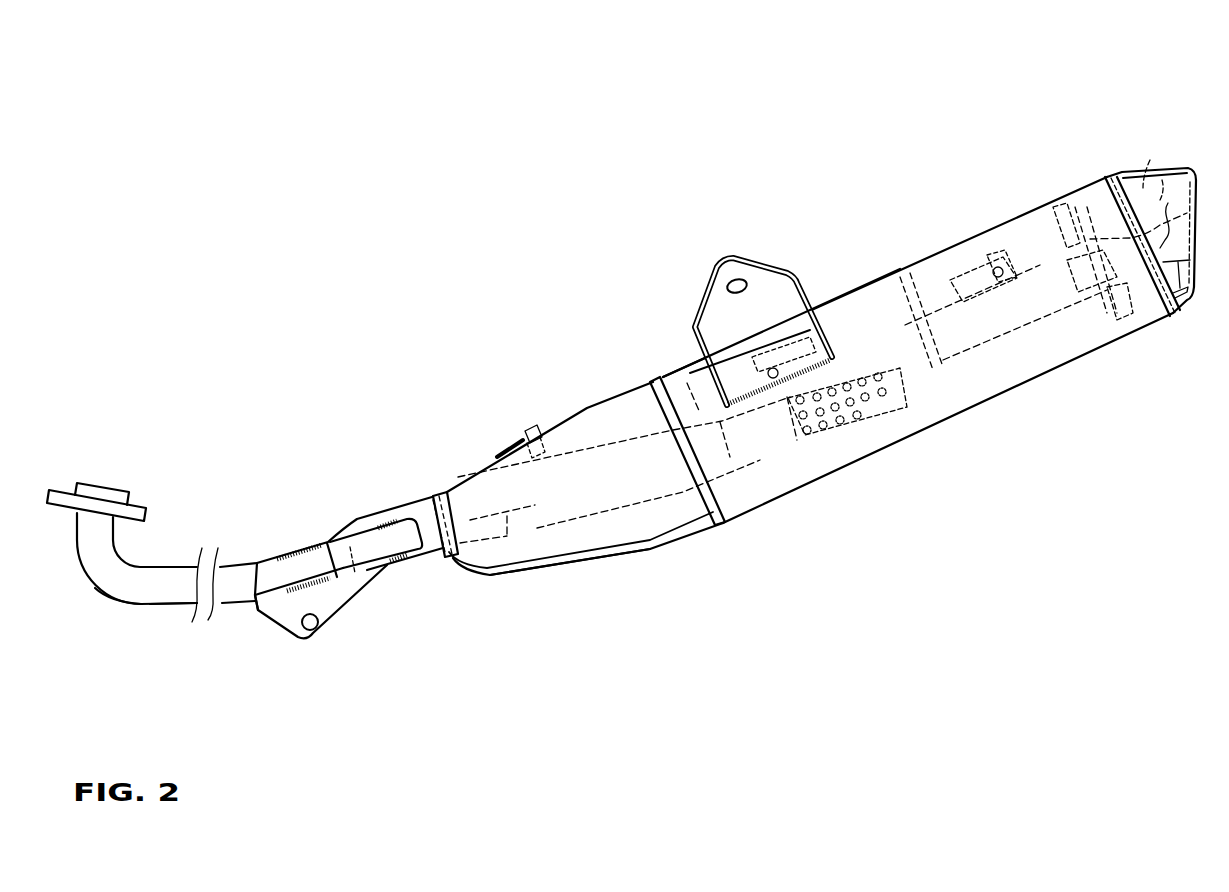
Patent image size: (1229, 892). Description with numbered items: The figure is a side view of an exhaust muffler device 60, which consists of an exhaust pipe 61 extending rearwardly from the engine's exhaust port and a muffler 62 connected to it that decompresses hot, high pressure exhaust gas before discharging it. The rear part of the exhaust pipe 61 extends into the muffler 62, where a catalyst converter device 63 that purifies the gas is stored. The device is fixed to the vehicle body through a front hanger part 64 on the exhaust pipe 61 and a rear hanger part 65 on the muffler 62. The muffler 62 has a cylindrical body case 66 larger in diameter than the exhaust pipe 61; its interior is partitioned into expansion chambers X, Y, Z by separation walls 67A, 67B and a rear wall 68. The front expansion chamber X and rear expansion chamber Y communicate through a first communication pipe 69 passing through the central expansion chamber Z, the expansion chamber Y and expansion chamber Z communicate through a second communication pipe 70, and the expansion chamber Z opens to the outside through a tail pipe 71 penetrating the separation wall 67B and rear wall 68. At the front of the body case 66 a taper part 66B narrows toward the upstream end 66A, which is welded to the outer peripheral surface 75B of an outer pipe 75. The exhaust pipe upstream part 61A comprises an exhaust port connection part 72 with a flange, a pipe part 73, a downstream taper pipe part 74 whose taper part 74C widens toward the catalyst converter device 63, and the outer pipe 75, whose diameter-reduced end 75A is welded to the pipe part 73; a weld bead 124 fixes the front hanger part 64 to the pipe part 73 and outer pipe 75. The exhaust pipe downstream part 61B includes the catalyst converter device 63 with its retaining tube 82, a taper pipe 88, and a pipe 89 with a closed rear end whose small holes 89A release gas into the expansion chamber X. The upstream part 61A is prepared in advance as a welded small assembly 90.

The exhaust muffler device 60 is at (976, 94).
The exhaust pipe 61 is at (173, 617).
The exhaust pipe upstream part 61A is at (147, 611).
The exhaust pipe downstream part 61B is at (535, 538).
The muffler 62 is at (937, 431).
The catalyst converter device 63 is at (614, 513).
The front hanger part 64 is at (335, 612).
The rear hanger part 65 is at (762, 276).
The body case 66 is at (878, 267).
The upstream end 66A is at (440, 493).
The taper part 66B is at (477, 463).
The separation wall 67A is at (937, 285).
The separation wall 67B is at (1107, 210).
The rear wall 68 is at (1148, 182).
The first communication pipe 69 is at (1063, 347).
The second communication pipe 70 is at (1150, 307).
The tail pipe 71 is at (1168, 182).
The exhaust port connection part 72 is at (137, 500).
The pipe part 73 is at (177, 566).
The downstream taper pipe part 74 is at (473, 468).
The taper part 74C is at (441, 490).
The outer pipe 75 is at (373, 517).
The diameter-reduced end 75A is at (347, 533).
The outer peripheral surface 75B is at (413, 573).
The retaining tube 82 is at (592, 440).
The taper pipe 88 is at (683, 377).
The pipe 89 is at (790, 440).
The small holes 89A is at (847, 427).
The small assembly 90 is at (233, 617).
The weld bead 124 is at (287, 560).
The expansion chamber X is at (838, 318).
The expansion chamber Y is at (1153, 303).
The expansion chamber Z is at (1017, 232).